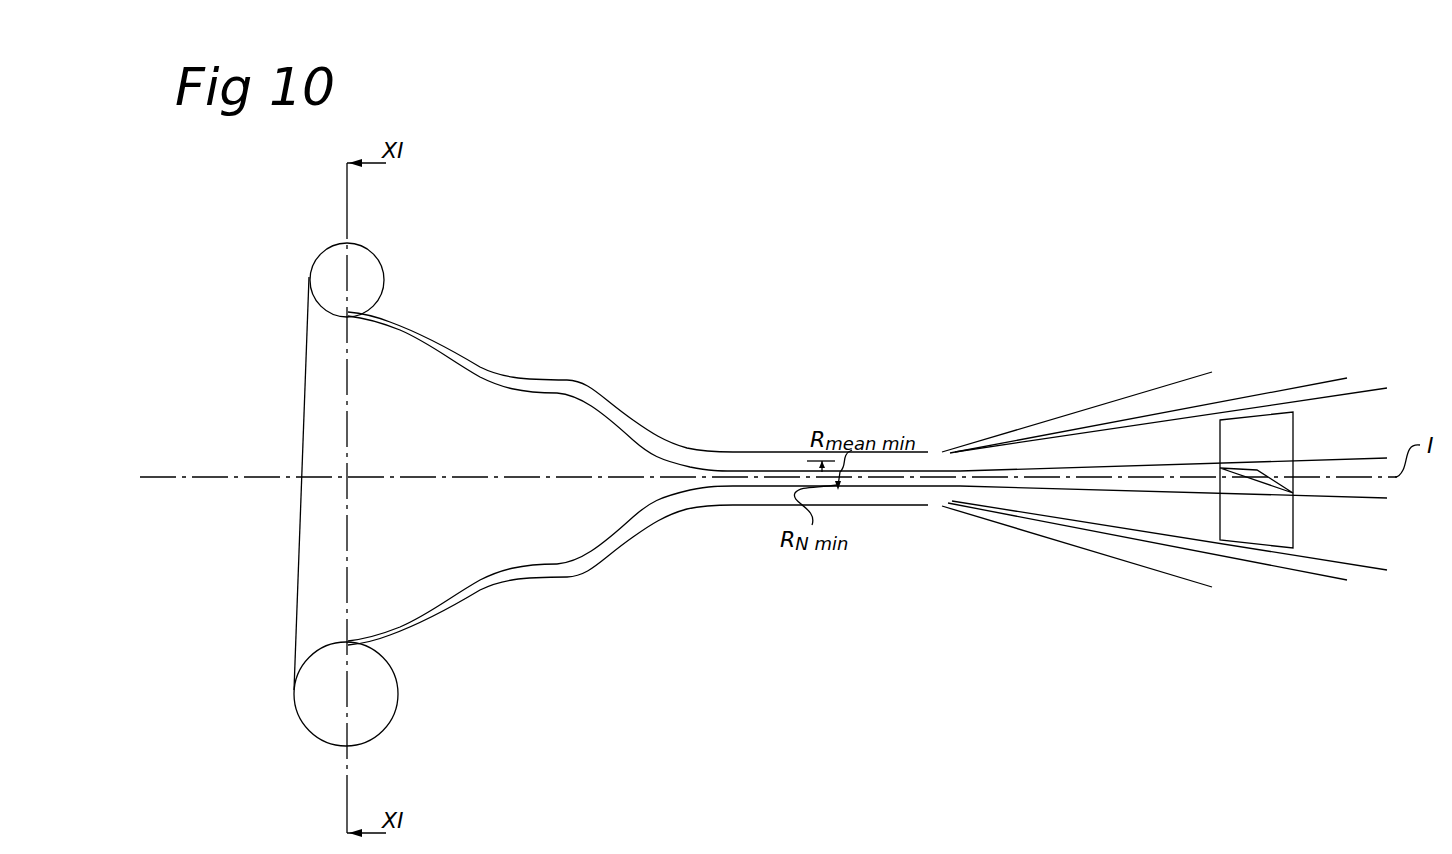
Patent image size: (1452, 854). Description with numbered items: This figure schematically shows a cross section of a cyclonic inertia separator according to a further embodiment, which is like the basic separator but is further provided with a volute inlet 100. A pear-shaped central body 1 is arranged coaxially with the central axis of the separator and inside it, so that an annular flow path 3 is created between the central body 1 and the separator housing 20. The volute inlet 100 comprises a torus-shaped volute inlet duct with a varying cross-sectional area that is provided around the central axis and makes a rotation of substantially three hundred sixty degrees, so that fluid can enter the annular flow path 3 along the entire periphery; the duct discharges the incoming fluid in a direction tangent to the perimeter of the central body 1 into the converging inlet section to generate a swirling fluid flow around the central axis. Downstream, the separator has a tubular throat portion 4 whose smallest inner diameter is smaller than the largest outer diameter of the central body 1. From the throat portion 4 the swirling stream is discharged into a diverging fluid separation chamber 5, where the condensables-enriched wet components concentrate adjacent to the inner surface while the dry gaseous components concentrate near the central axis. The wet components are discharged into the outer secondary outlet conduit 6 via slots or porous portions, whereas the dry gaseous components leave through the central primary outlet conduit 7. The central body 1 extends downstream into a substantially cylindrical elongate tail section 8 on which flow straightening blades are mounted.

The volute inlet 100 is at (397, 262).
The annular flow path 3 is at (451, 357).
The central body 1 is at (552, 408).
The separator housing 20 is at (597, 398).
The tubular throat portion 4 is at (733, 462).
The diverging fluid separation chamber 5 is at (937, 498).
The outer secondary outlet conduit 6 is at (948, 452).
The central primary outlet conduit 7 is at (990, 503).
The elongate tail section 8 is at (993, 473).